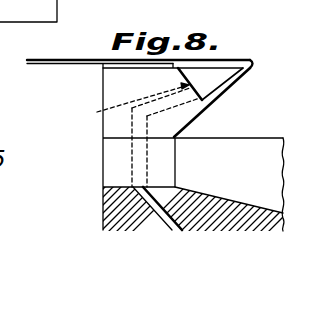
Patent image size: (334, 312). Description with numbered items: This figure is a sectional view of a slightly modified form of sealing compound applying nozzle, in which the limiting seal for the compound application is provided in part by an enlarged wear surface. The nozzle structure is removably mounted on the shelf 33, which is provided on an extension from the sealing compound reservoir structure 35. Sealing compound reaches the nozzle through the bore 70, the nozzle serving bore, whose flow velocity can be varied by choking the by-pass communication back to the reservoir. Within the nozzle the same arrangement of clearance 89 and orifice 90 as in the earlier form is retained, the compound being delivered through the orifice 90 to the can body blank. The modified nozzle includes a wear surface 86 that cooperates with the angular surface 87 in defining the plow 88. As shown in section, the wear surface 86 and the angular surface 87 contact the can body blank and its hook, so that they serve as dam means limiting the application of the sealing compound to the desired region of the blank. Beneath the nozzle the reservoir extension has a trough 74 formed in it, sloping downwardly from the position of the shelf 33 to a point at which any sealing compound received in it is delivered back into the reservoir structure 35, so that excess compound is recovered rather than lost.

The wear surface 86 is at (108, 74).
The clearance 89 is at (198, 78).
The orifice 90 is at (133, 135).
The plow 88 is at (232, 60).
The angular surface 87 is at (196, 121).
The sealing compound reservoir structure 35 is at (299, 134).
The trough 74 is at (246, 178).
The bore 70 is at (117, 195).
The shelf 33 is at (115, 209).